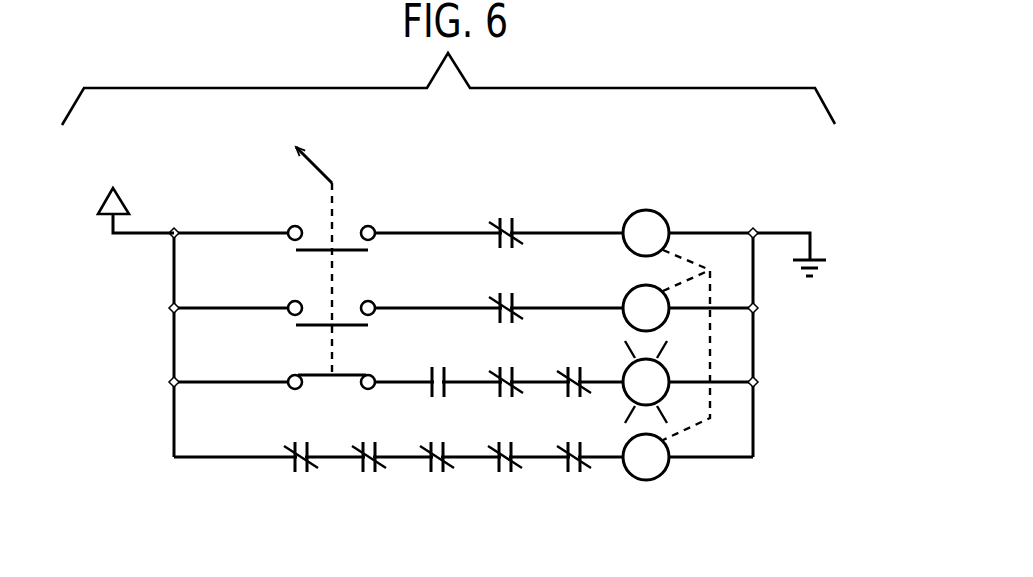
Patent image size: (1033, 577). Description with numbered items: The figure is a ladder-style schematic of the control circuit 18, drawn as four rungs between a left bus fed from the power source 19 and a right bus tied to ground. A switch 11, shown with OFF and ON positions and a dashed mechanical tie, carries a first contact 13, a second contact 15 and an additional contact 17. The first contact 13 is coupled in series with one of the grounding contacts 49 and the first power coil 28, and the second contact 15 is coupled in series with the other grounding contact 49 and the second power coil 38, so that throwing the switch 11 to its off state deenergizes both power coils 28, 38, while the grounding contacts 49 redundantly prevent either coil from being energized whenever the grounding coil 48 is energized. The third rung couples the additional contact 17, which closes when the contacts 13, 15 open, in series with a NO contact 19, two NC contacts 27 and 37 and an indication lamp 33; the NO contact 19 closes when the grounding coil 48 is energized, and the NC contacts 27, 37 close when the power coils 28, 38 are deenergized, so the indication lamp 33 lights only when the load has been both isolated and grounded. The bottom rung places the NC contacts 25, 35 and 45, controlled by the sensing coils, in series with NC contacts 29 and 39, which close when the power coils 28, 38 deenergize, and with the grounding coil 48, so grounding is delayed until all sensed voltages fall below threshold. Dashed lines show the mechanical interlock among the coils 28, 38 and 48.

The switch 11 is at (405, 178).
The first contact 13 is at (374, 256).
The second contact 15 is at (283, 323).
The additional contact 17 is at (358, 397).
The control circuit 18 is at (612, 527).
The power source 19 is at (102, 238).
The NC contact 25 is at (293, 470).
The NC contact 27 is at (497, 372).
The first power coil 28 is at (629, 216).
The NC contact 29 is at (497, 470).
The indication lamp 33 is at (627, 397).
The NC contact 35 is at (362, 470).
The NC contact 37 is at (565, 373).
The second power coil 38 is at (629, 292).
The NC contact 39 is at (567, 470).
The NC contact 45 is at (430, 470).
The grounding coil 48 is at (660, 474).
The grounding contacts 49 is at (496, 228).